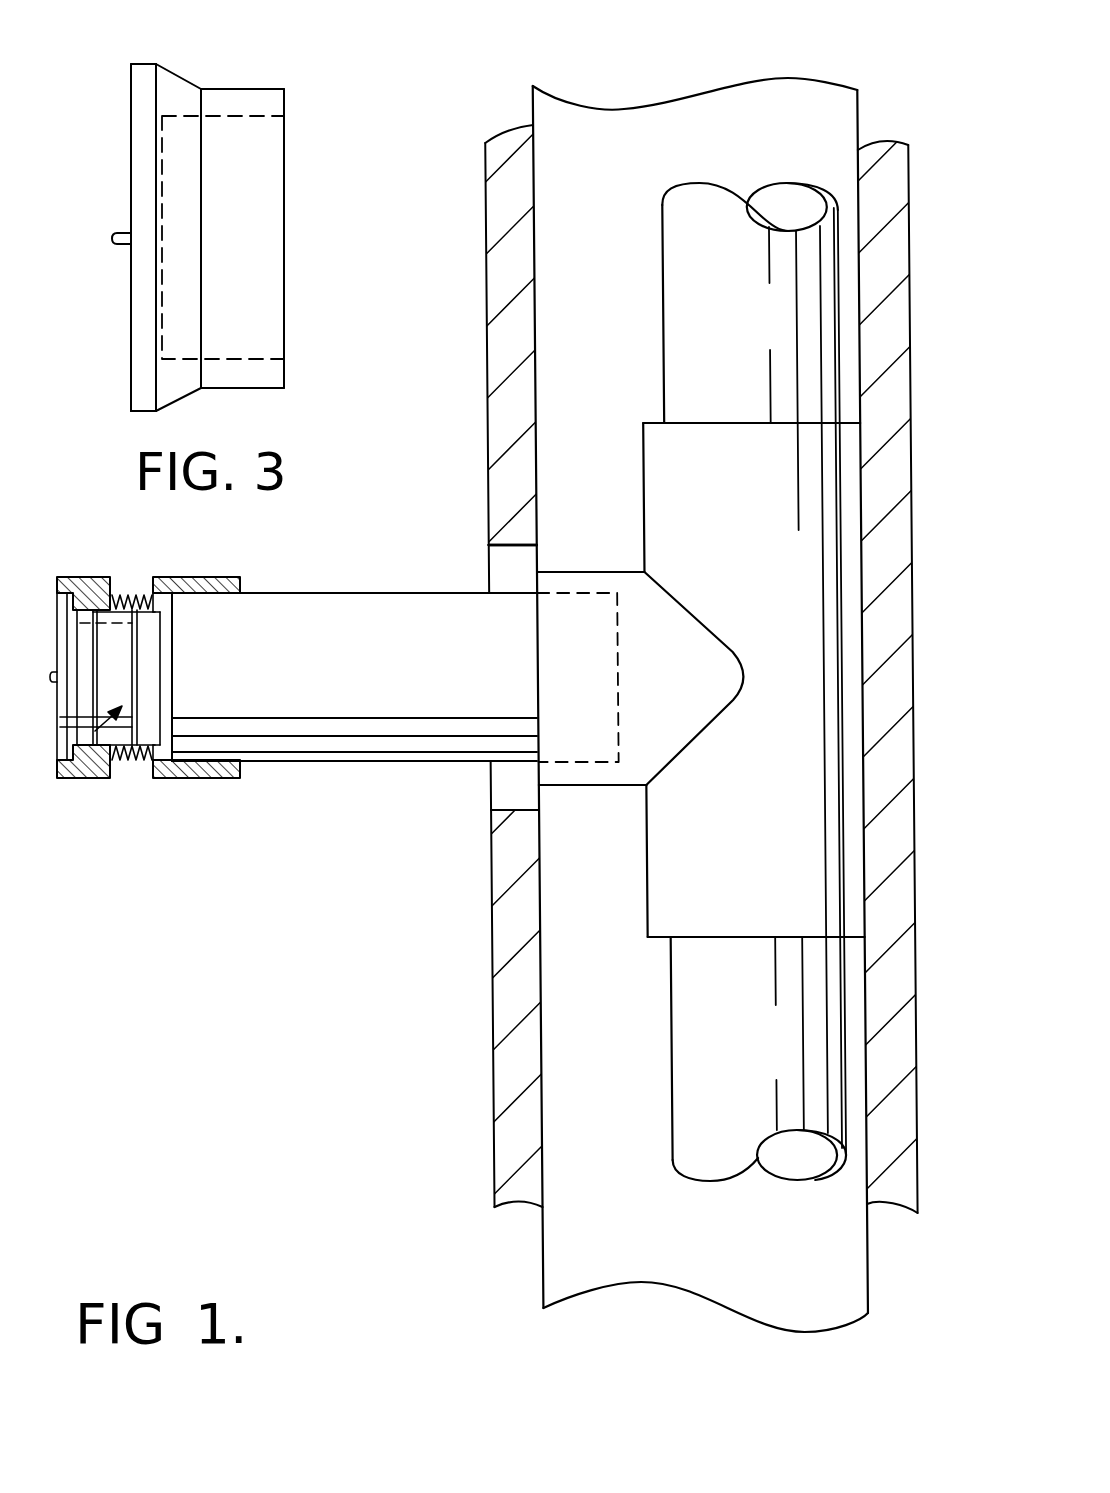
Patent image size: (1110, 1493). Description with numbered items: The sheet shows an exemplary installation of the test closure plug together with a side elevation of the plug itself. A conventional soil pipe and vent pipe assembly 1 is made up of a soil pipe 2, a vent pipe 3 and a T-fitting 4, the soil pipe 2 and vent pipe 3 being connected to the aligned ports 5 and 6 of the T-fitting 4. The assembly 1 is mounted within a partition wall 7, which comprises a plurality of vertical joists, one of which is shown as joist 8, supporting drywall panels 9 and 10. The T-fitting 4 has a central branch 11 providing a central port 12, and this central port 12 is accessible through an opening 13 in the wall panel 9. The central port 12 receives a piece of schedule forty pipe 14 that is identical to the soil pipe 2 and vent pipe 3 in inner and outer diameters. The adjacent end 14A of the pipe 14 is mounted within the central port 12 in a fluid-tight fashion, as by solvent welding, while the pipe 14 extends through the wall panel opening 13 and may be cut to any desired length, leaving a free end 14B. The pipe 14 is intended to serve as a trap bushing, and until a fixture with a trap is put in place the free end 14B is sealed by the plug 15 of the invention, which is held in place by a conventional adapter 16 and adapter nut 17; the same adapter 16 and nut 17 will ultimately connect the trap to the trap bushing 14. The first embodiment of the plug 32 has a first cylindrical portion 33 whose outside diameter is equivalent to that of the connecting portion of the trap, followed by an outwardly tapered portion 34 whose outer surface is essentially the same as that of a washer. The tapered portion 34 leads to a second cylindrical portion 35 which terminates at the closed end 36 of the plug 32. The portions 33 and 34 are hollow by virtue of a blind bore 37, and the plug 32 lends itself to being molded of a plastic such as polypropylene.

In FIG. 1, the soil pipe and vent pipe assembly 1 is at (644, 484).
In FIG. 1, the soil pipe 2 is at (730, 1059).
In FIG. 1, the vent pipe 3 is at (731, 303).
In FIG. 1, the T-fitting 4 is at (753, 680).
In FIG. 1, the port 5 is at (674, 957).
In FIG. 1, the port 6 is at (665, 398).
In FIG. 1, the partition wall 7 is at (485, 666).
In FIG. 1, the vertical joist 8 is at (700, 705).
In FIG. 1, the drywall panel 9 is at (512, 1228).
In FIG. 1, the drywall panel 10 is at (895, 693).
In FIG. 1, the central branch 11 is at (611, 805).
In FIG. 1, the central port 12 is at (617, 678).
In FIG. 1, the opening 13 is at (483, 558).
In FIG. 1, the pipe 14 is at (354, 707).
In FIG. 1, the adjacent end 14A is at (577, 677).
In FIG. 1, the free end 14B is at (206, 677).
In FIG. 1, the plug 15 is at (130, 703).
In FIG. 1, the adapter 16 is at (196, 705).
In FIG. 1, the adapter nut 17 is at (95, 694).
In FIG. 3, the plug 32 is at (283, 46).
In FIG. 3, the first cylindrical portion 33 is at (272, 219).
In FIG. 3, the outwardly tapered portion 34 is at (193, 224).
In FIG. 3, the second cylindrical portion 35 is at (116, 431).
In FIG. 3, the closed end 36 is at (113, 237).
In FIG. 3, the blind bore 37 is at (250, 237).